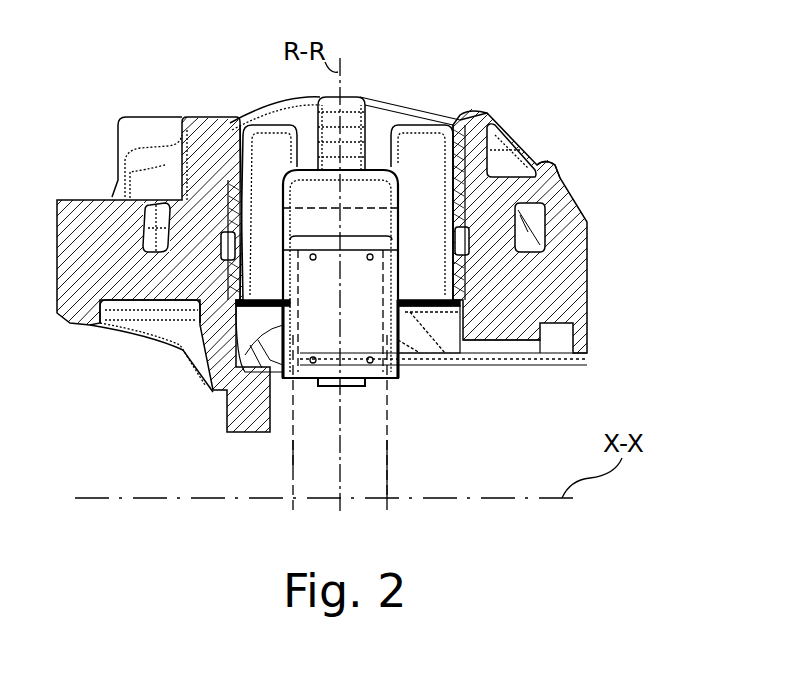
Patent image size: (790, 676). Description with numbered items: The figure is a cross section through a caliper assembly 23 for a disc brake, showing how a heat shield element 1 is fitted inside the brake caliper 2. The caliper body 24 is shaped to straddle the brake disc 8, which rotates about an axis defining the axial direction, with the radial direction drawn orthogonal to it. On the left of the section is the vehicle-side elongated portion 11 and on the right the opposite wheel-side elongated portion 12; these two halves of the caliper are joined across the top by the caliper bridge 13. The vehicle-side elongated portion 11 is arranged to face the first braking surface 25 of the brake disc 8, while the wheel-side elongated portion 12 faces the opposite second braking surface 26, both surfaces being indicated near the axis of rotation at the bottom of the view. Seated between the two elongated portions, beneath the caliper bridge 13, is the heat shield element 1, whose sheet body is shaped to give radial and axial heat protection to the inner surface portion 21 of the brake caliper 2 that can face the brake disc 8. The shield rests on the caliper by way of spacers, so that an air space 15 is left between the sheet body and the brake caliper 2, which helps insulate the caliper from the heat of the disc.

The heat shield element 1 is at (350, 210).
The brake caliper 2 is at (210, 142).
The brake disc 8 is at (390, 458).
The vehicle-side elongated portion 11 is at (185, 285).
The wheel-side elongated portion 12 is at (560, 293).
The caliper bridge 13 is at (385, 125).
The air space 15 is at (287, 170).
The inner surface portion 21 is at (232, 305).
The caliper assembly 23 is at (528, 102).
The caliper body 24 is at (553, 185).
The first braking surface 25 is at (288, 460).
The second braking surface 26 is at (392, 483).